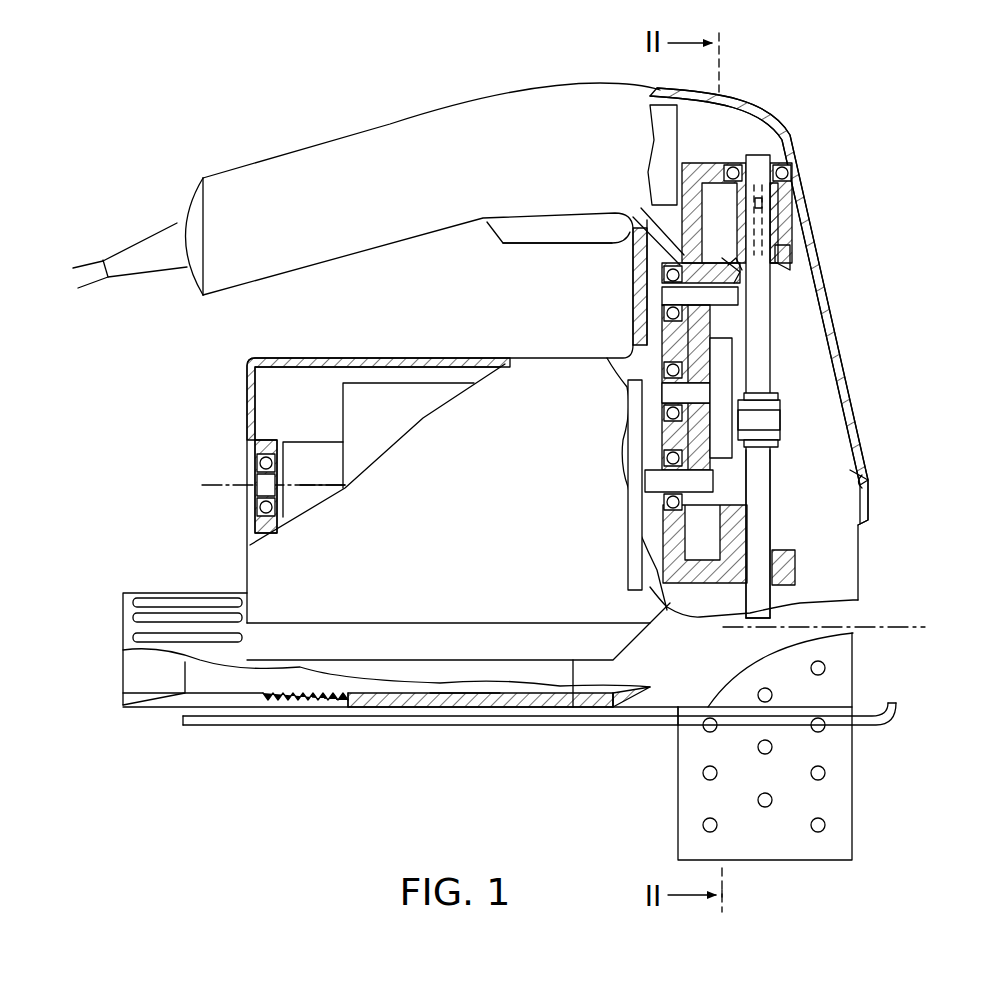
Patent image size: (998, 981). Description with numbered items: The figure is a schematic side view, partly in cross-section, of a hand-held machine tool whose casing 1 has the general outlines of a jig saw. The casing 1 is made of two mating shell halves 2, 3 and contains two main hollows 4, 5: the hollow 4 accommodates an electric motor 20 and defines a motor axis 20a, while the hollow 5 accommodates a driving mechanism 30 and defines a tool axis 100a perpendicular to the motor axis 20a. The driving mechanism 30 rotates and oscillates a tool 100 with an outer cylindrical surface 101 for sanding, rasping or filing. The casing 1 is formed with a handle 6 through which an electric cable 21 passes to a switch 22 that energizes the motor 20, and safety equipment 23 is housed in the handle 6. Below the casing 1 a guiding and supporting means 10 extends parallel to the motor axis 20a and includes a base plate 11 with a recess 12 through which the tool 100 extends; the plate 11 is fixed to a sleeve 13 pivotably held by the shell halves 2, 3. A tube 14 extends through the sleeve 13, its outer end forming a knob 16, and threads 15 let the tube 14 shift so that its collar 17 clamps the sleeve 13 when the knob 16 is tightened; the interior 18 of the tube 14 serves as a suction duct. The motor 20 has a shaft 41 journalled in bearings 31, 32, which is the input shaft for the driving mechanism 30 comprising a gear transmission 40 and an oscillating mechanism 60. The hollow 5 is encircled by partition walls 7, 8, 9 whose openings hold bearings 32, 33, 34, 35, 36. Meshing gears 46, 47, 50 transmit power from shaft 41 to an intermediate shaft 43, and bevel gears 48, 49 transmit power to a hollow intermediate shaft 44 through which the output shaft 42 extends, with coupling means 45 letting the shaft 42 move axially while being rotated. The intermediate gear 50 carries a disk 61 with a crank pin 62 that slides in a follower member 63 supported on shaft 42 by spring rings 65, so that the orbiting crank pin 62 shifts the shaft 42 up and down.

The casing 1 is at (246, 395).
The shell half 2 is at (478, 136).
The shell half 3 is at (742, 97).
The hollow 4 is at (432, 368).
The hollow 5 is at (860, 480).
The handle 6 is at (288, 178).
The partition wall 7 is at (607, 358).
The partition wall 8 is at (690, 165).
The partition wall 9 is at (697, 573).
The guiding and supporting means 10 is at (262, 740).
The base plate or skid plate 11 is at (640, 722).
The recess 12 is at (878, 712).
The sleeve 13 is at (390, 702).
The tube 14 is at (462, 702).
The threads 15 is at (290, 702).
The knob 16 is at (180, 598).
The collar 17 is at (565, 702).
The interior of the tube 18 is at (156, 690).
The electric motor 20 is at (375, 408).
The motor axis 20a is at (335, 490).
The electric cable 21 is at (92, 278).
The switch 22 is at (530, 233).
The safety equipment 23 is at (660, 148).
The driving mechanism 30 is at (832, 197).
The bearing 31 is at (257, 518).
The bearing 32 is at (642, 525).
The bearing 33 is at (662, 280).
The bearing 34 is at (772, 158).
The bearing 35 is at (784, 553).
The bearing 36 is at (662, 440).
The gear transmission 40 is at (626, 340).
The shaft 41 is at (660, 490).
The output shaft 42 is at (762, 482).
The intermediate shaft 43 is at (690, 290).
The intermediate shaft 44 is at (779, 232).
The coupling means 45 is at (762, 203).
The gear 46 is at (697, 505).
The gear 47 is at (633, 217).
The bevel gear 48 is at (738, 318).
The bevel gear 49 is at (788, 257).
The intermediate gear 50 is at (662, 418).
The oscillating mechanism 60 is at (792, 412).
The disk 61 is at (722, 372).
The crank pin 62 is at (770, 392).
The follower member 63 is at (760, 420).
The spring rings 65 is at (768, 445).
The tool 100 is at (856, 790).
The tool axis 100a is at (854, 627).
The outer cylindrical surface 101 is at (855, 747).